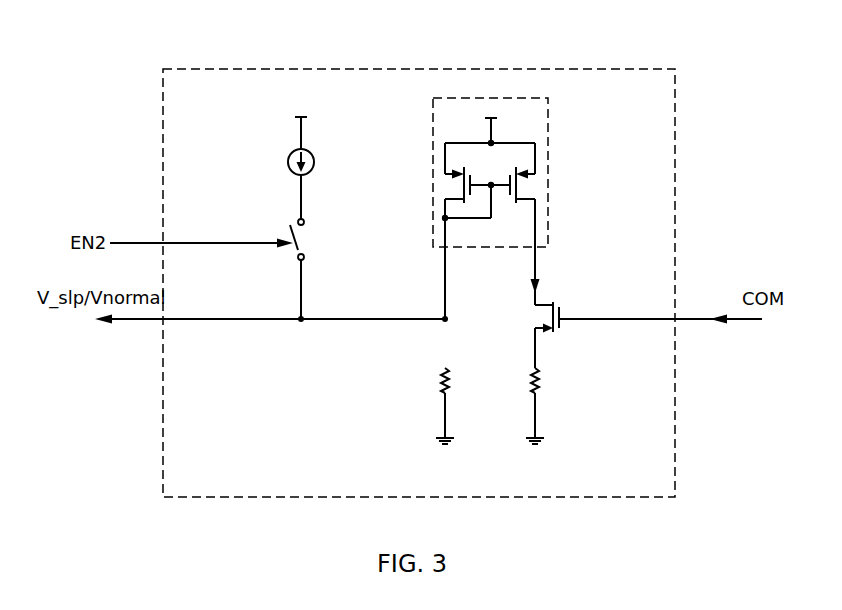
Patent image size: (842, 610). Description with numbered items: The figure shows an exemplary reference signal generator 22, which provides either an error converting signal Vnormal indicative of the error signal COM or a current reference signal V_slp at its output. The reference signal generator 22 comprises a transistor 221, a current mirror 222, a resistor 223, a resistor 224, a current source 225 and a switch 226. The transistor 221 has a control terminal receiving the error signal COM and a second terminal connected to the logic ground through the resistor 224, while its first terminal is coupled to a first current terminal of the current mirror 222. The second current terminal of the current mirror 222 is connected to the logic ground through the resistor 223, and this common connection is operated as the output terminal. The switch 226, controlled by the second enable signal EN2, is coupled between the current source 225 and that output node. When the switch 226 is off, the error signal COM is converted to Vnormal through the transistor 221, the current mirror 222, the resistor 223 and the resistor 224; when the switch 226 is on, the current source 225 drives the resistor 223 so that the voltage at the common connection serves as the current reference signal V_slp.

The reference signal generator 22 is at (632, 69).
The transistor 221 is at (558, 292).
The current mirror 222 is at (432, 177).
The resistor 223 is at (455, 388).
The resistor 224 is at (545, 388).
The current source 225 is at (292, 170).
The switch 226 is at (308, 242).